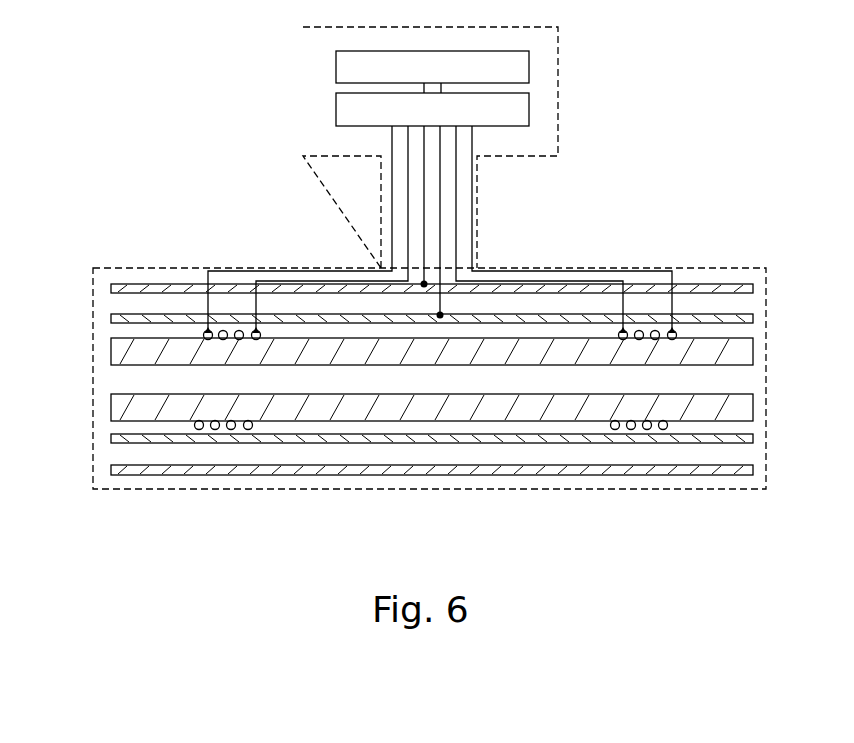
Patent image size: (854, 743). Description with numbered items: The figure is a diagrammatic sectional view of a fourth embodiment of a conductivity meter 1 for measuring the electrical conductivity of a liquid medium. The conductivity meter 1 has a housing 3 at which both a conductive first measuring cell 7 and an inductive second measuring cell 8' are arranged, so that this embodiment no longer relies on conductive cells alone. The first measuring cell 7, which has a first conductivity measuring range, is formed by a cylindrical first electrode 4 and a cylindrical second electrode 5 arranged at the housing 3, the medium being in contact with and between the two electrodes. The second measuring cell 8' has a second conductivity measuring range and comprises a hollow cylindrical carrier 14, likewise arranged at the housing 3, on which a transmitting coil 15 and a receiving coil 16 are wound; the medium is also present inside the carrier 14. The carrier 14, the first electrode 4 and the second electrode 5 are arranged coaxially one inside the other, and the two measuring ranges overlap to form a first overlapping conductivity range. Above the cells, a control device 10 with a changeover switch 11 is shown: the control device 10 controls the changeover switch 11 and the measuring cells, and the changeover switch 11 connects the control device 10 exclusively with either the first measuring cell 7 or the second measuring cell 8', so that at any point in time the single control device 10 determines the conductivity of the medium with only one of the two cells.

The conductivity meter 1 is at (684, 93).
The housing 3 is at (708, 483).
The first electrode 4 is at (111, 288).
The second electrode 5 is at (111, 319).
The first measuring cell 7 is at (756, 300).
The inductive second measuring cell 8' is at (429, 409).
The control device 10 is at (386, 80).
The changeover switch 11 is at (386, 122).
The hollow cylindrical carrier 14 is at (130, 405).
The transmitting coil 15 is at (210, 436).
The receiving coil 16 is at (641, 439).